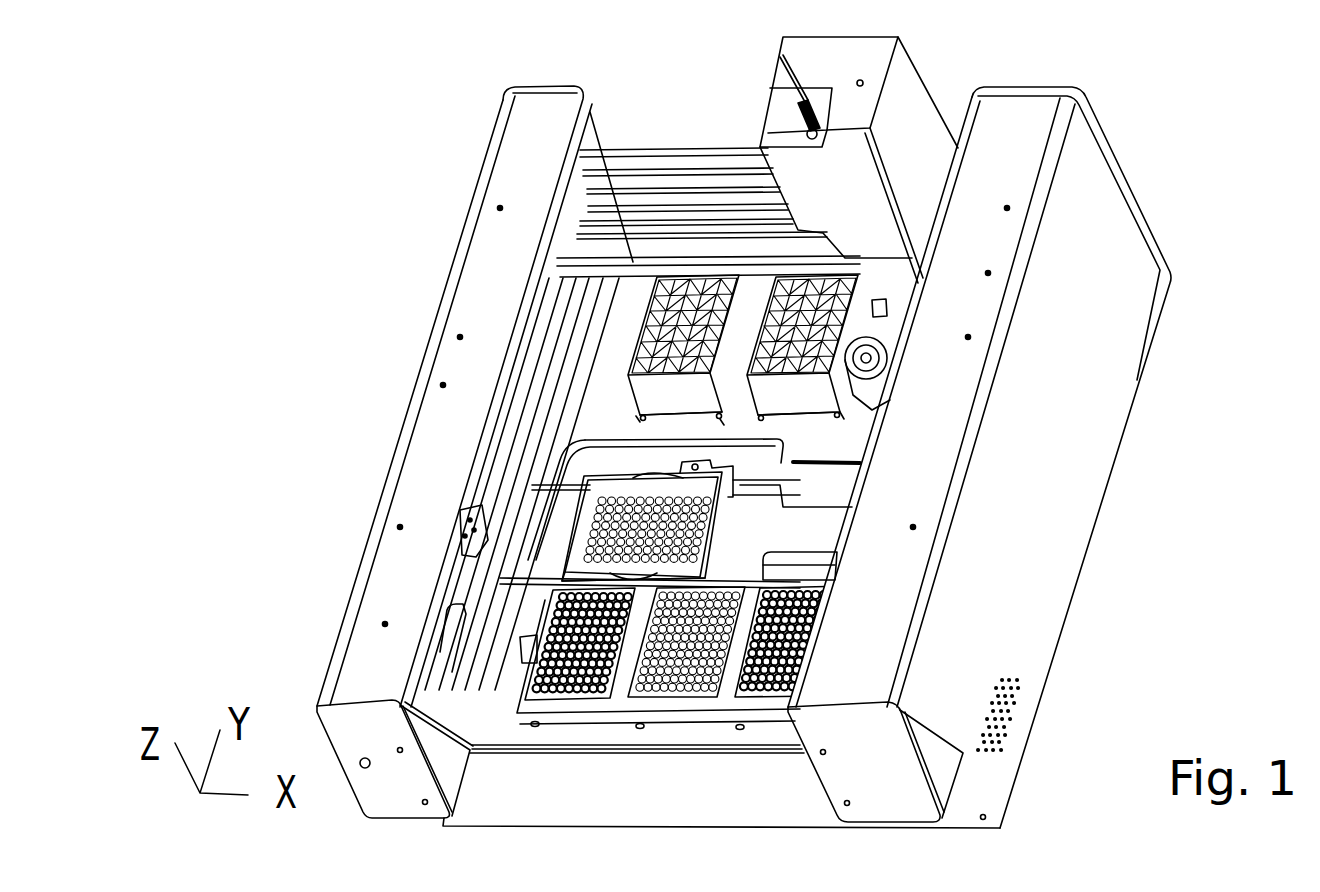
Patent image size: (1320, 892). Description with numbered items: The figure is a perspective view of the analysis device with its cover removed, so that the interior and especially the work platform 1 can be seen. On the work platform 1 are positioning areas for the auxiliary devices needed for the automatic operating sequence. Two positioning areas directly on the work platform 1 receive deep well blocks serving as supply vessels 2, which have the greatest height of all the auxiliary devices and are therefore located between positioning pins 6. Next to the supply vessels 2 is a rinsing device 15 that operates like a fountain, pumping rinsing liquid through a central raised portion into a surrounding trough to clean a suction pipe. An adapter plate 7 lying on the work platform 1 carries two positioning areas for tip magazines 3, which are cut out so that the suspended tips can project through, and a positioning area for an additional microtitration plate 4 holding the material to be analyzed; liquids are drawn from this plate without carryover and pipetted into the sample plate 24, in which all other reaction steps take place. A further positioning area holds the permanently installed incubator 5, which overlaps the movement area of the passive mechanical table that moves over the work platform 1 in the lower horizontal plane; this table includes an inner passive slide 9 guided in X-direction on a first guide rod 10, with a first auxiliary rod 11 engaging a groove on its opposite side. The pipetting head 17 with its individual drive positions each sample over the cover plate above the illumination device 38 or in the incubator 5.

The work platform 1 is at (887, 313).
The supply vessels 2 is at (857, 303).
The tip magazines 3 is at (520, 665).
The additional microtitration plates 4 is at (567, 570).
The incubator 5 is at (800, 522).
The positioning pins 6 is at (848, 409).
The adapter plate 7 is at (520, 712).
The inner passive slide 9 is at (683, 567).
The first guide rod 10 is at (566, 492).
The first auxiliary rod 11 is at (560, 583).
The rinsing device 15 is at (870, 391).
The pipetting head 17 is at (905, 135).
The sample plate 24 is at (590, 497).
The illumination device 38 is at (782, 477).